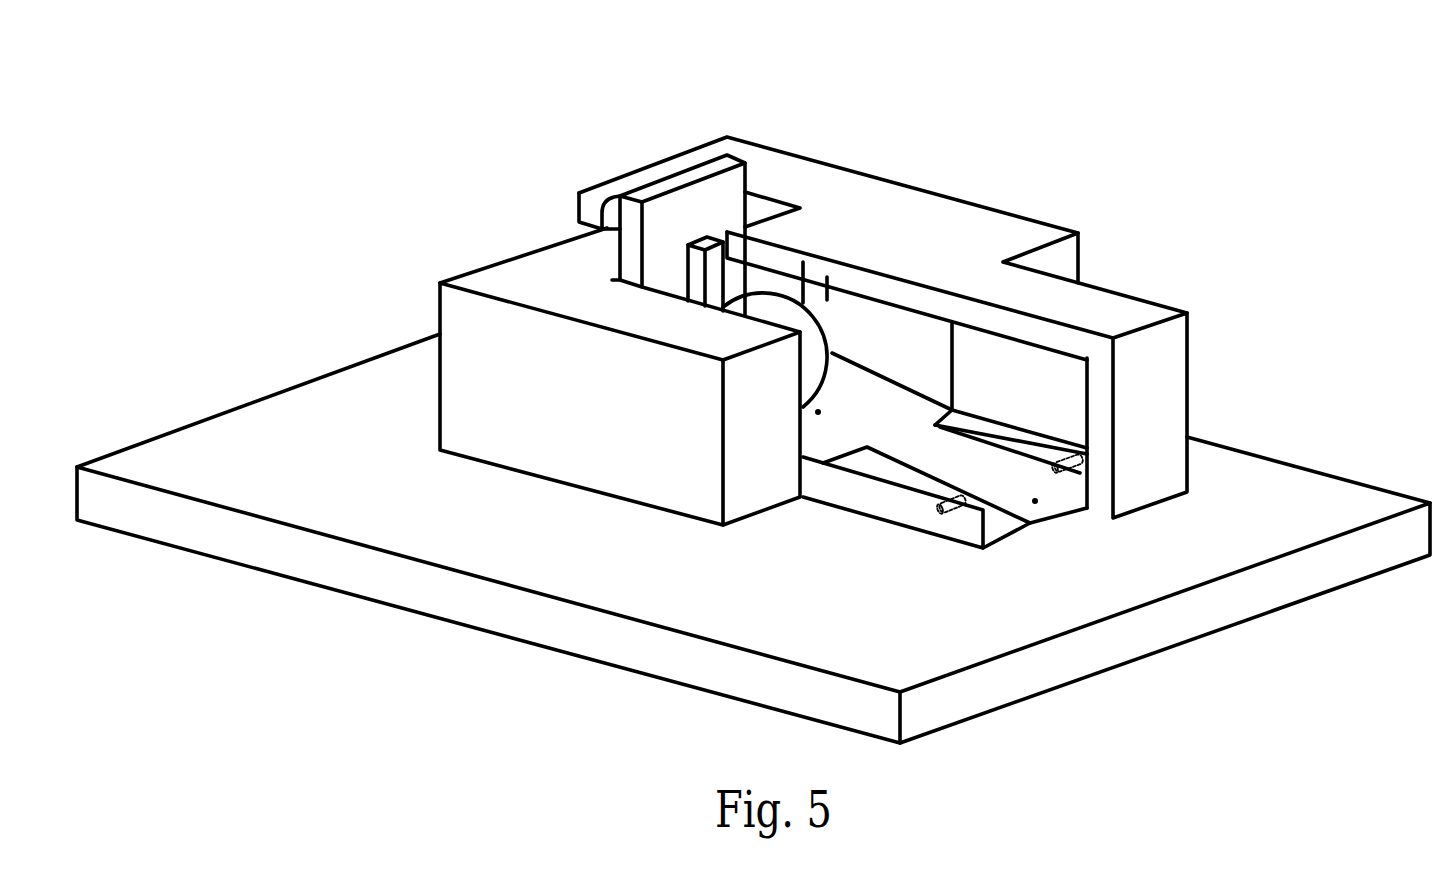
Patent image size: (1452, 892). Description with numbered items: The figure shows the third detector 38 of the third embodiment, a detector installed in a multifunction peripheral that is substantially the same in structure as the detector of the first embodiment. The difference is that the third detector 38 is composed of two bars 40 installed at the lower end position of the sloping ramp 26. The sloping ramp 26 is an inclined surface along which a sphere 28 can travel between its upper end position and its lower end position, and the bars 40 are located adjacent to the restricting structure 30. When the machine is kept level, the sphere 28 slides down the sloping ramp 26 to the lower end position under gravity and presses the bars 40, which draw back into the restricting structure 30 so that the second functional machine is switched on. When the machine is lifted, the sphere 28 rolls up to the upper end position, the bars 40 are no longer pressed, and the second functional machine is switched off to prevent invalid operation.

The third detector 38 is at (1198, 133).
The sphere 28 is at (813, 367).
The restricting structure 30 is at (1188, 372).
The sloping ramp 26 is at (972, 468).
The bars 40 is at (1087, 467).